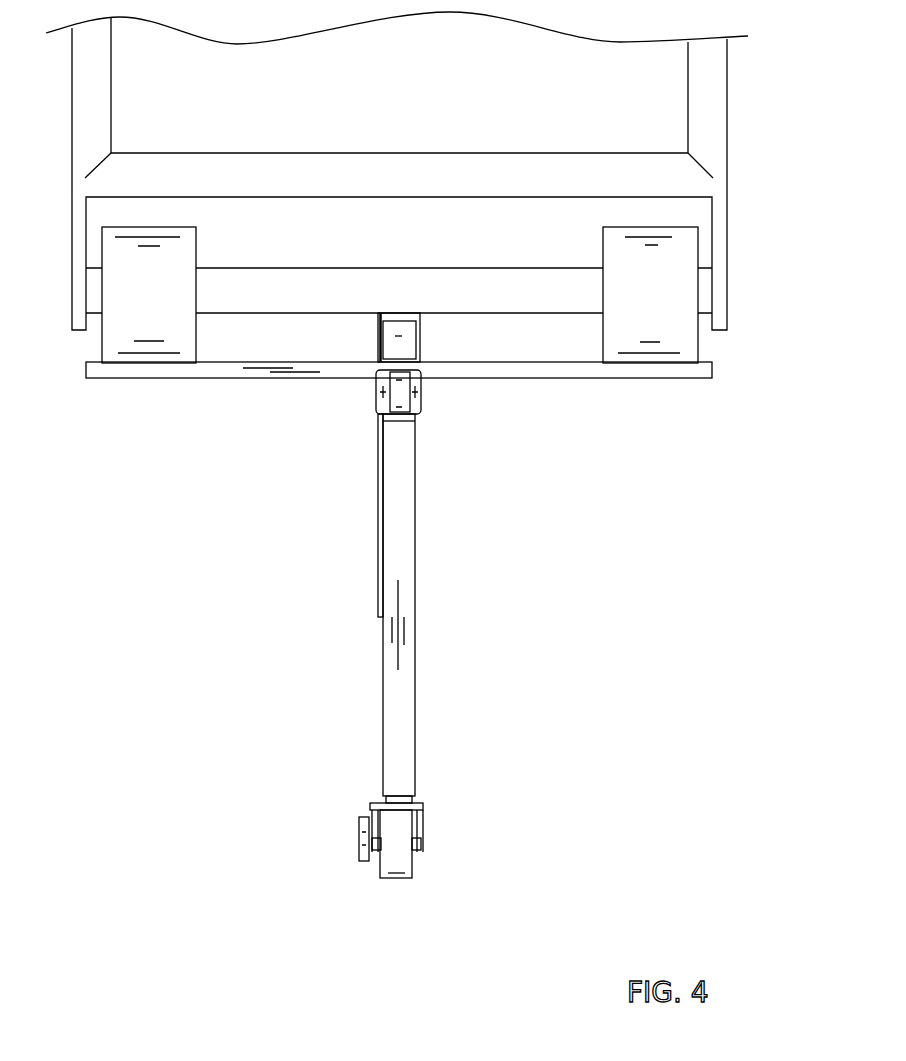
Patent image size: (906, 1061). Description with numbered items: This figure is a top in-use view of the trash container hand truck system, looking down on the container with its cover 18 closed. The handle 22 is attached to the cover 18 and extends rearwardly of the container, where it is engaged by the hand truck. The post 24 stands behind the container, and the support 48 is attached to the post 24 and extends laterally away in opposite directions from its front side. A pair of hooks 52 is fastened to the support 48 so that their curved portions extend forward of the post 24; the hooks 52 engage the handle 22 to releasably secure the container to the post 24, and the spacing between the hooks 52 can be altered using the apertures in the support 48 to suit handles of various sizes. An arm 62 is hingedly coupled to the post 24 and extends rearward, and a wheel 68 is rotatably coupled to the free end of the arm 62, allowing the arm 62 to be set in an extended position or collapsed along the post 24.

The cover 18 is at (715, 116).
The handle 22 is at (503, 348).
The post 24 is at (392, 340).
The support 48 is at (142, 378).
The hooks 52 is at (106, 341).
The arm 62 is at (400, 708).
The wheel 68 is at (402, 868).